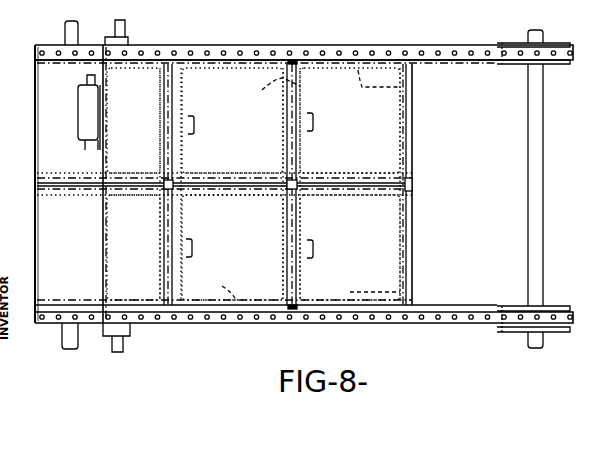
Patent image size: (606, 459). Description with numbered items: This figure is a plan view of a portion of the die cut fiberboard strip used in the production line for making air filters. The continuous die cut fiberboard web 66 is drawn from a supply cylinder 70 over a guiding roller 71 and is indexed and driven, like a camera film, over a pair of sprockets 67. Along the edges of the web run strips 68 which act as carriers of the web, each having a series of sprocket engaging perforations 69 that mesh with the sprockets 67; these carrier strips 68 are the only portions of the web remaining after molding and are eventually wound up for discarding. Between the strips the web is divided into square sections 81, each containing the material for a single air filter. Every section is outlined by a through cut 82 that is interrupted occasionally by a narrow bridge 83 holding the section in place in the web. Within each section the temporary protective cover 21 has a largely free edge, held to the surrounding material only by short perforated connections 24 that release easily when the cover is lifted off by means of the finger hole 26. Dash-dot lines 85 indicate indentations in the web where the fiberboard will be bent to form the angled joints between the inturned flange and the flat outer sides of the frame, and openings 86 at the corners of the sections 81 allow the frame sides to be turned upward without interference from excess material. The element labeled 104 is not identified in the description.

The temporary protective cover 21 is at (235, 137).
The perforated connections 24 is at (300, 185).
The finger hole 26 is at (194, 127).
The continuous die cut fiberboard web 66 is at (244, 45).
The sprockets 67 is at (128, 40).
The strips 68 is at (348, 44).
The sprocket engaging perforations 69 is at (258, 46).
The supply cylinder 70 is at (36, 118).
The guiding roller 71 is at (78, 133).
The square sections 81 is at (405, 48).
The through cut 82 is at (384, 45).
The narrow bridge 83 is at (289, 46).
The dash-dot lines 85 is at (206, 66).
The openings 86 is at (167, 181).
The end post 104 is at (556, 43).